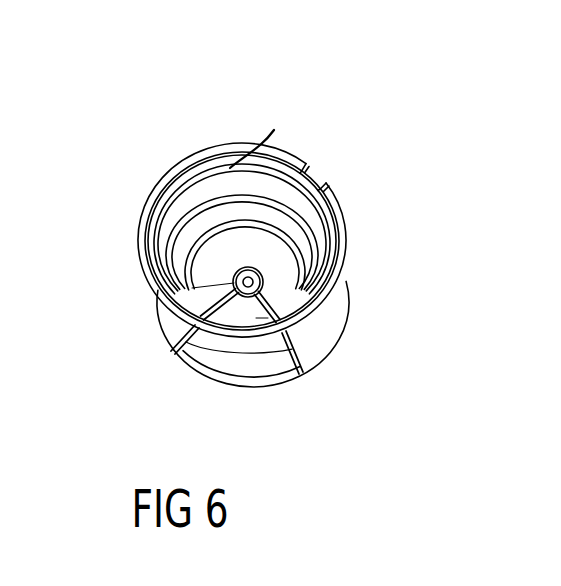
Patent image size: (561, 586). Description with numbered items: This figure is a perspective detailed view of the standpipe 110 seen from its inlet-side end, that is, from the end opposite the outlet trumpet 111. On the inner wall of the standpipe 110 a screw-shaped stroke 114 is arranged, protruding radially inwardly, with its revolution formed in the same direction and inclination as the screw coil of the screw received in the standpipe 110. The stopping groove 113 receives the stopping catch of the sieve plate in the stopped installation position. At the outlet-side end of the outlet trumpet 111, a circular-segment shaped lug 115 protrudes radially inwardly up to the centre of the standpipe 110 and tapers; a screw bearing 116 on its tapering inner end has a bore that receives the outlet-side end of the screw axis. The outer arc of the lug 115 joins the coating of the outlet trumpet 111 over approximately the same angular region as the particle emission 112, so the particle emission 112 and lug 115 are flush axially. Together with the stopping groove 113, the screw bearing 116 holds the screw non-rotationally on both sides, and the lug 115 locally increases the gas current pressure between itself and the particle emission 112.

The standpipe 110 is at (204, 185).
The outlet trumpet 111 is at (305, 240).
The particle emission 112 is at (261, 381).
The stopping groove 113 is at (360, 158).
The screw-shaped stroke 114 is at (275, 91).
The lug 115 is at (299, 325).
The screw bearing 116 is at (123, 319).